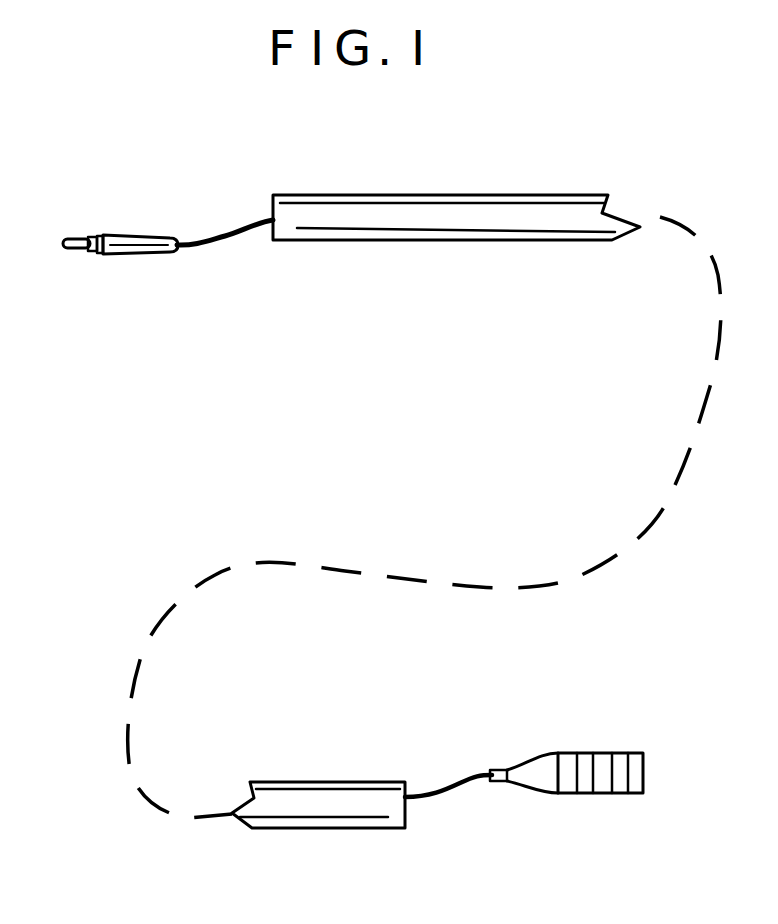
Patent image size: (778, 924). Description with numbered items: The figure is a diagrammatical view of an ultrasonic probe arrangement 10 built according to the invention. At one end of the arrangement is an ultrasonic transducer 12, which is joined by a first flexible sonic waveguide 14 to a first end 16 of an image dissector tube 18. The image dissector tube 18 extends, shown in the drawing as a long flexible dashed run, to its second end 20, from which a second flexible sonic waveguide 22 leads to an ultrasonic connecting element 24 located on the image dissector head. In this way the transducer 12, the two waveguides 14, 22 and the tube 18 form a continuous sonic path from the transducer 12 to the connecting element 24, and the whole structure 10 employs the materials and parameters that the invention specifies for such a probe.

The ultrasonic probe arrangement 10 is at (440, 190).
The ultrasonic transducer 12 is at (600, 795).
The first flexible sonic waveguide 14 is at (532, 785).
The first end 16 is at (408, 812).
The image dissector tube 18 is at (540, 243).
The second end 20 is at (272, 210).
The second flexible sonic waveguide 22 is at (135, 238).
The ultrasonic connecting element 24 is at (80, 240).